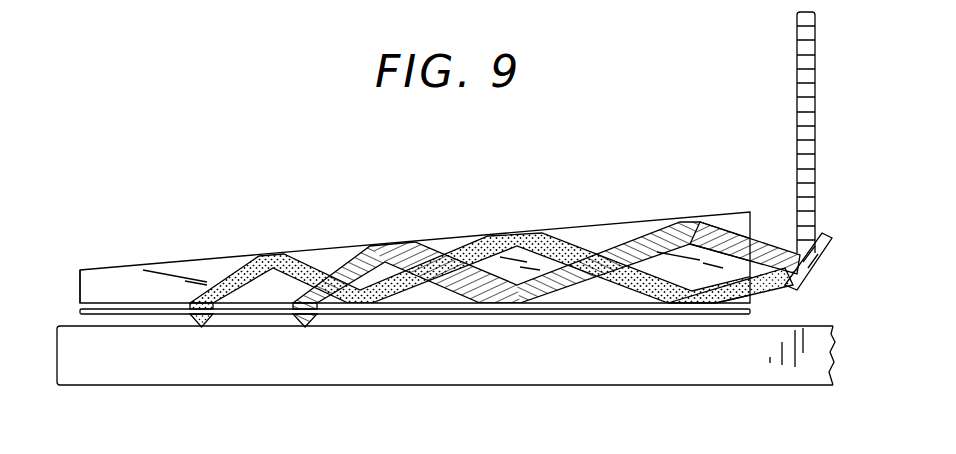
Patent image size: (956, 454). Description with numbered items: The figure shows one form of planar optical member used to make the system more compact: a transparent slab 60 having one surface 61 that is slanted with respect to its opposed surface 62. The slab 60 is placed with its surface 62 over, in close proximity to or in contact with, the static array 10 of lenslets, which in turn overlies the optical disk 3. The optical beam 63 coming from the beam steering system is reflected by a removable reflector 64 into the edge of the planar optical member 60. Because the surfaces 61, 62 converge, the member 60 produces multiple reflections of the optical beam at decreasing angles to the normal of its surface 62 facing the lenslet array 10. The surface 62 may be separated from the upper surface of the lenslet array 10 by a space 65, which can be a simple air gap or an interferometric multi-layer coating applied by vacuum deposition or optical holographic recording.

The static array of lenslets 10 is at (68, 318).
The optical disk 3 is at (415, 372).
The transparent slab 60 is at (222, 268).
The slanted surface 61 is at (117, 265).
The opposed surface 62 is at (752, 300).
The optical beam 63 is at (815, 89).
The removable reflector 64 is at (835, 240).
The space 65 is at (72, 306).